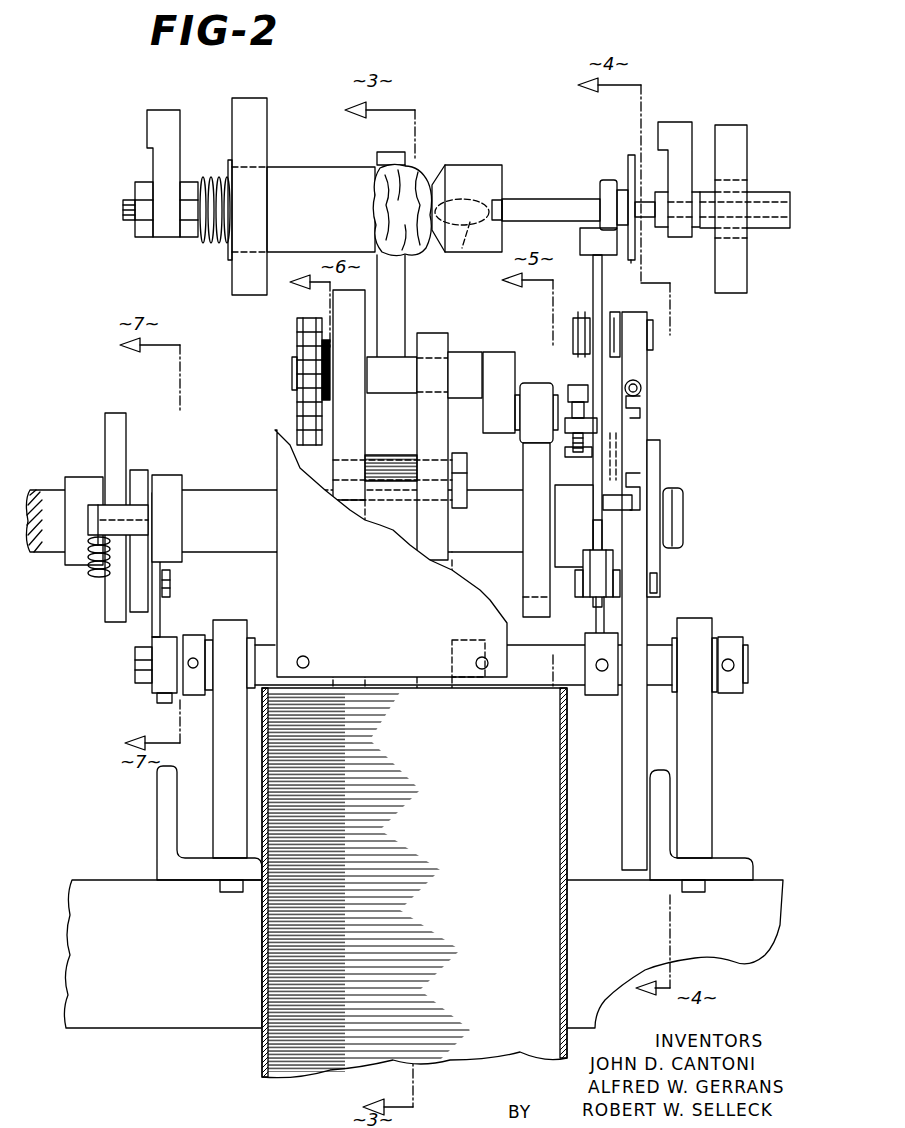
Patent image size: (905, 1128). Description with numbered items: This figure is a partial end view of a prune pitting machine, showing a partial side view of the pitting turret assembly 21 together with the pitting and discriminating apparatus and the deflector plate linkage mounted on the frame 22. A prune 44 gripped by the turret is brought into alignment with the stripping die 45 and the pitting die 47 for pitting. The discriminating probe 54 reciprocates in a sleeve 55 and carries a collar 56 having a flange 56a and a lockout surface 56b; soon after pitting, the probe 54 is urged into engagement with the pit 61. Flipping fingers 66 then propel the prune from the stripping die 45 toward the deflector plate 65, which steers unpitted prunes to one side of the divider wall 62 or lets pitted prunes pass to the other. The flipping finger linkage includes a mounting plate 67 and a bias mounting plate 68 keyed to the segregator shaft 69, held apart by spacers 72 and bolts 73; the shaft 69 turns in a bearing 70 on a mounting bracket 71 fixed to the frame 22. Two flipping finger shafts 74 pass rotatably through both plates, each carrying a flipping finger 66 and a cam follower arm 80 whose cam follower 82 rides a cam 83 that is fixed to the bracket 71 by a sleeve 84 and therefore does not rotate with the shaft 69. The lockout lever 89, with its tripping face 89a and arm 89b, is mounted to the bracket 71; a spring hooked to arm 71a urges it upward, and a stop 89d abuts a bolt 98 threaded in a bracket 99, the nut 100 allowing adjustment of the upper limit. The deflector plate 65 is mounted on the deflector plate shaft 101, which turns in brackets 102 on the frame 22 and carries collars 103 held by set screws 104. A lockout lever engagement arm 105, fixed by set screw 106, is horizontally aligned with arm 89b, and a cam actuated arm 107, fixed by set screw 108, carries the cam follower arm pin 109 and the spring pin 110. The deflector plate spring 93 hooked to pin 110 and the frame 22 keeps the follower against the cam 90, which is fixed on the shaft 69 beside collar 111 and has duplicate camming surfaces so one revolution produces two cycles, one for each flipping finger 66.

The pitting turret assembly 21 is at (270, 104).
The frame 22 is at (112, 888).
The prune 44 is at (424, 176).
The stripping die 45 is at (364, 172).
The pitting die 47 is at (468, 168).
The probe 54 is at (562, 186).
The sleeve 55 is at (770, 198).
The collar 56 is at (606, 182).
The flange 56a is at (631, 157).
The lockout surface 56b is at (632, 262).
The pit 61 is at (468, 245).
The divider wall 62 is at (414, 883).
The deflector plate 65 is at (277, 575).
The flipping finger 66 is at (406, 290).
The mounting plate 67 is at (449, 334).
The bias mounting plate 68 is at (358, 421).
The segregator shaft 69 is at (238, 490).
The bearing 70 is at (658, 533).
The mounting bracket 71 is at (648, 616).
The arm 71a is at (642, 388).
The spacers 72 is at (398, 456).
The bolts 73 is at (468, 471).
The flipping finger shaft 74 is at (388, 355).
The cam follower arm 80 is at (498, 353).
The cam follower 82 is at (535, 385).
The cam 83 is at (523, 508).
The sleeve 84 is at (574, 526).
The lockout lever 89 is at (593, 278).
The tripping face 89a is at (583, 236).
The arm 89b is at (600, 533).
The stop 89d is at (572, 458).
The cam 90 is at (108, 415).
The deflector plate spring 93 is at (94, 575).
The bolt 98 is at (588, 386).
The bracket 99 is at (612, 433).
The nut 100 is at (568, 397).
The deflector plate shaft 101 is at (135, 660).
The brackets 102 is at (228, 620).
The collar 103 is at (195, 633).
The set screws 104 is at (193, 669).
The lockout lever engagement arm 105 is at (596, 621).
The set screw 106 is at (599, 672).
The cam actuated arm 107 is at (152, 626).
The set screw 108 is at (160, 703).
The cam follower arm pin 109 is at (171, 586).
The spring pin 110 is at (92, 508).
The collar 111 is at (175, 478).